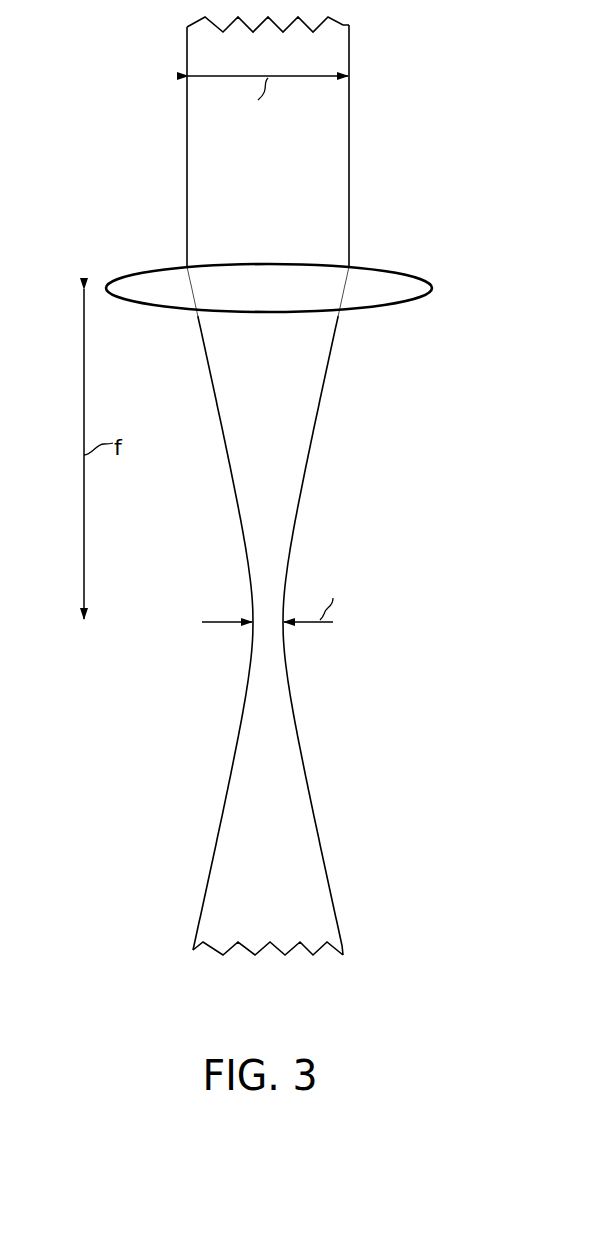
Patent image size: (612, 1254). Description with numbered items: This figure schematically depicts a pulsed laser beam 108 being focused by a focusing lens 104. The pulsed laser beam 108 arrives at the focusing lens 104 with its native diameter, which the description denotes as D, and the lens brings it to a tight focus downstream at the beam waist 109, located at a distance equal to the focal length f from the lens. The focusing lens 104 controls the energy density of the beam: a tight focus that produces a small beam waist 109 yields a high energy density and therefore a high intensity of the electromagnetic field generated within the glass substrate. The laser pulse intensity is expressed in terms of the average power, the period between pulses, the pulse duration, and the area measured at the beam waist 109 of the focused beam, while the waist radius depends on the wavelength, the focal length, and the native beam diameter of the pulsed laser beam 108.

The pulsed laser beam 108 is at (349, 108).
The focusing lens 104 is at (432, 288).
The beam waist 109 is at (284, 628).